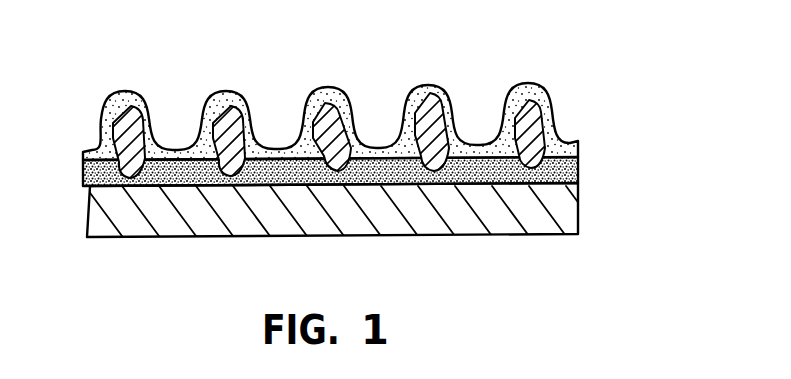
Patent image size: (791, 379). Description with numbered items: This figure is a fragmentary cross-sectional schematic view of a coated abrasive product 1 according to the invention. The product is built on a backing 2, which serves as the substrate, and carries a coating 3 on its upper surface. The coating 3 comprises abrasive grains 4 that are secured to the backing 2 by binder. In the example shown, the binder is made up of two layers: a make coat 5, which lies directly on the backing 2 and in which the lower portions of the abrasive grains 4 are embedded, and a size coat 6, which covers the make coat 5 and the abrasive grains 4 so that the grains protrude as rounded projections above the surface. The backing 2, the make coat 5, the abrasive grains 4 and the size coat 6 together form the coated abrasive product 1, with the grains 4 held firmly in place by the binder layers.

The coated abrasive product 1 is at (322, 145).
The backing 2 is at (173, 223).
The coating 3 is at (322, 120).
The abrasive grains 4 is at (226, 110).
The make coat 5 is at (83, 175).
The size coat 6 is at (102, 142).